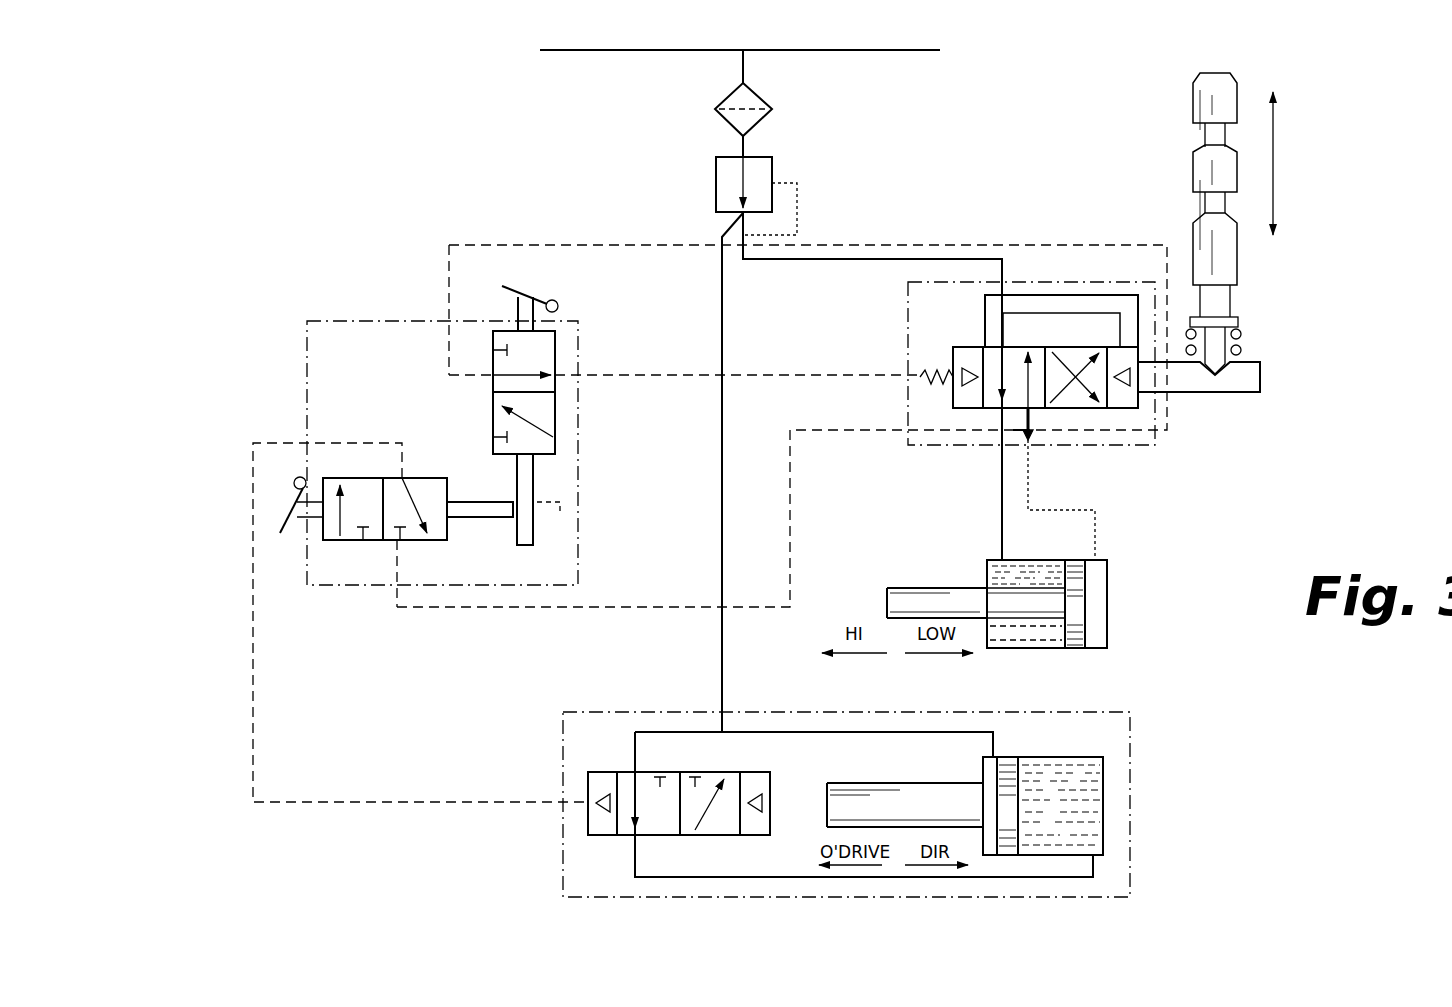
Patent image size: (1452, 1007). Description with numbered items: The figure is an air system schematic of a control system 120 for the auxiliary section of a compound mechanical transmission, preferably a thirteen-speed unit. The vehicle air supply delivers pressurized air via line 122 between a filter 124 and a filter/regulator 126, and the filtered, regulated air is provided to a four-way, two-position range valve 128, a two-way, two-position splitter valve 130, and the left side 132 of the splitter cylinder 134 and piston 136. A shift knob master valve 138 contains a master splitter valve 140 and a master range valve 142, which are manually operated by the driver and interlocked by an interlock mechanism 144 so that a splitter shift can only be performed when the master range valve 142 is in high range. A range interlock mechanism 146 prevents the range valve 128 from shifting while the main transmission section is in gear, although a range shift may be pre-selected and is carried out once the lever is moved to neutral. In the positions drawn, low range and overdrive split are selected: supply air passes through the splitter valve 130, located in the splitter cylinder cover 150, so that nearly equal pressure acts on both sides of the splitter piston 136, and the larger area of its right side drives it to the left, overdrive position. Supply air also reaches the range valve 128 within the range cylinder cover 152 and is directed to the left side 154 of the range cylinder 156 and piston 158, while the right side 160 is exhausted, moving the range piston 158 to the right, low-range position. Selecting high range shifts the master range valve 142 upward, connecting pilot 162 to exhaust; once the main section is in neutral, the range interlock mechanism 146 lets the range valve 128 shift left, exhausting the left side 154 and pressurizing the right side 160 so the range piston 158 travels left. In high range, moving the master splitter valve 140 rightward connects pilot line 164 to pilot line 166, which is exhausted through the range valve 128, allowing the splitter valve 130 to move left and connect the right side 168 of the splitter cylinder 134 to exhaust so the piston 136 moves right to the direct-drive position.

The control system 120 is at (446, 139).
The line 122 is at (690, 50).
The filter 124 is at (768, 97).
The filter/regulator 126 is at (714, 181).
The range valve 128 is at (970, 408).
The splitter valve 130 is at (655, 835).
The left side of splitter cylinder 132 is at (981, 770).
The splitter cylinder 134 is at (1053, 757).
The splitter piston 136 is at (1008, 757).
The shift knob master valve 138 is at (363, 587).
The master splitter valve 140 is at (362, 478).
The master range valve 142 is at (555, 420).
The interlock mechanism 144 is at (586, 498).
The range interlock mechanism 146 is at (1247, 290).
The splitter cylinder cover 150 is at (1135, 890).
The range cylinder cover 152 is at (1157, 423).
The left side of range cylinder 154 is at (985, 577).
The range cylinder 156 is at (1043, 560).
The range piston 158 is at (1075, 648).
The right side of range cylinder 160 is at (1092, 586).
The pilot 162 is at (752, 377).
The pilot line 164 is at (250, 613).
The pilot line 166 is at (545, 607).
The right side of splitter cylinder 168 is at (1077, 805).